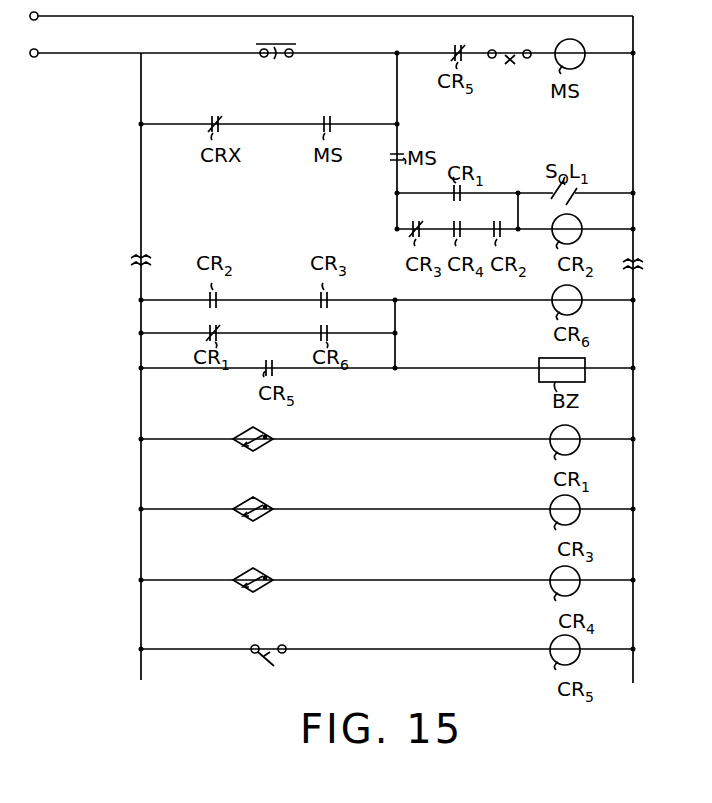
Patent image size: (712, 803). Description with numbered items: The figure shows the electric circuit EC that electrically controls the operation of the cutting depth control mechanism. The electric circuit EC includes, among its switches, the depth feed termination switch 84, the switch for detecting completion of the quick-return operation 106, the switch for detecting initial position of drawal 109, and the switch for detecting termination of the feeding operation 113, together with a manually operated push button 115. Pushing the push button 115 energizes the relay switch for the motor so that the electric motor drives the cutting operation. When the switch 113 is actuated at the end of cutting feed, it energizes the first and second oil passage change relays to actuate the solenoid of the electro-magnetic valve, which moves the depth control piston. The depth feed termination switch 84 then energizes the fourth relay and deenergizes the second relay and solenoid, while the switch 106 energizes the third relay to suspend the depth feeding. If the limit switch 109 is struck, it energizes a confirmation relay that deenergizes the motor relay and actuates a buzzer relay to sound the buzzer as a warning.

The push button 115 is at (278, 66).
The switch for detecting termination of the feeding operation 113 is at (258, 450).
The switch for detecting completion of the quick-return operation 106 is at (258, 520).
The depth feed termination switch 84 is at (258, 591).
The limit switch 109 is at (268, 658).
The electric circuit EC is at (648, 153).